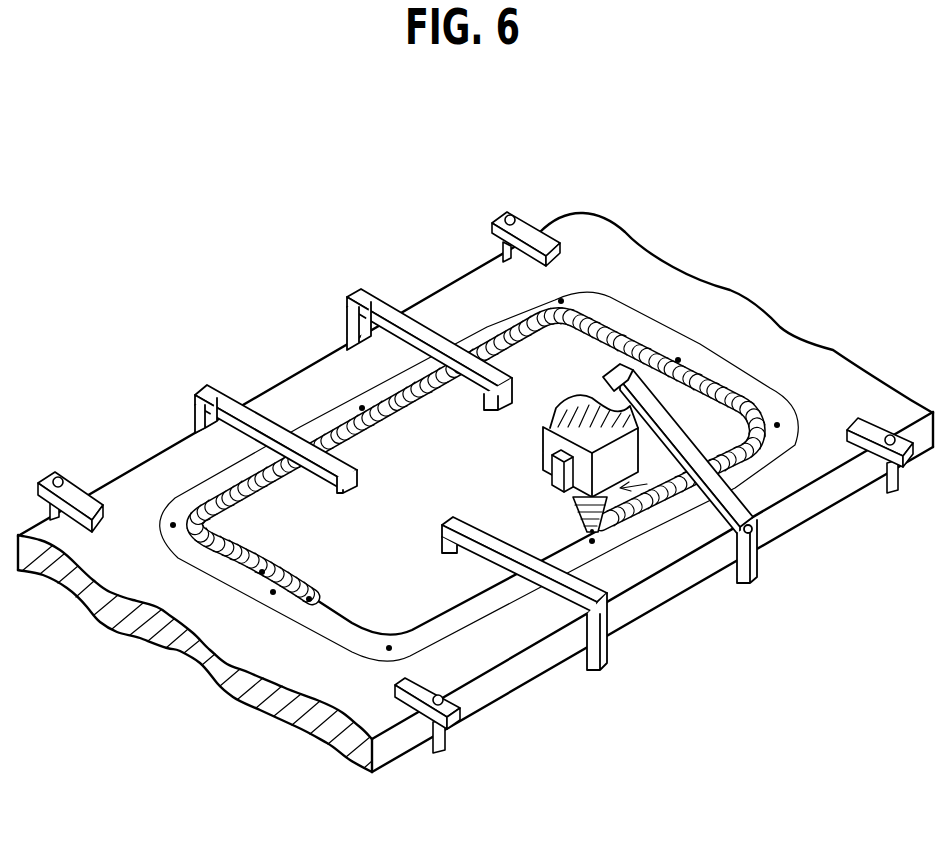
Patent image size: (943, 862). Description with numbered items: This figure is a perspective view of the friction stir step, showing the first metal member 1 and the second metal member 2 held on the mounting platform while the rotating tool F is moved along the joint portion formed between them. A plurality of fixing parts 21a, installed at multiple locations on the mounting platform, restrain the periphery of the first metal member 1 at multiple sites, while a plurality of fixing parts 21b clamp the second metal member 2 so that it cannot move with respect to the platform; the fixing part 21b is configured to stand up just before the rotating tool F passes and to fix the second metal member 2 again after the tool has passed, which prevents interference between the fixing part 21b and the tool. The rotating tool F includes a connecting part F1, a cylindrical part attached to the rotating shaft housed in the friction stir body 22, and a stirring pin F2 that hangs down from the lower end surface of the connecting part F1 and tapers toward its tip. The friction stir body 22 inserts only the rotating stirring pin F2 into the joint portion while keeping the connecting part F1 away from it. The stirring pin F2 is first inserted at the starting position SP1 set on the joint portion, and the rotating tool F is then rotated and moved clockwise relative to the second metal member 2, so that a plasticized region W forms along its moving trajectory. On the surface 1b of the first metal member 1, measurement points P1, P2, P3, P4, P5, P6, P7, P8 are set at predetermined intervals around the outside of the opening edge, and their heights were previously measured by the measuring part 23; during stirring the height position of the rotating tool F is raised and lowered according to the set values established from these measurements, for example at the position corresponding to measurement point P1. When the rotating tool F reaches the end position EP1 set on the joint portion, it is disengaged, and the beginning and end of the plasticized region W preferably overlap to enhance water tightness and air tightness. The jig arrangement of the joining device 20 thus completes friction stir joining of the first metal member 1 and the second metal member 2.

The first metal member 1 is at (570, 699).
The surface of the first metal member 1b is at (458, 620).
The second metal member 2 is at (517, 372).
The jig 20 is at (750, 656).
The fixing part 21a is at (530, 230).
The fixing part 21b is at (385, 308).
The friction stir body 22 is at (576, 402).
The measuring part 23 is at (554, 462).
The connecting part F1 is at (566, 496).
The stirring pin F2 is at (577, 518).
The rotating tool F is at (663, 540).
The measurement point P1 is at (272, 592).
The measurement point P2 is at (173, 525).
The measurement point P3 is at (362, 408).
The measurement point P4 is at (562, 301).
The measurement point P5 is at (680, 358).
The measurement point P6 is at (777, 426).
The measurement point P7 is at (592, 541).
The measurement point P8 is at (389, 649).
The starting position SP1 is at (310, 599).
The end position EP1 is at (262, 572).
The plasticized region W is at (324, 437).